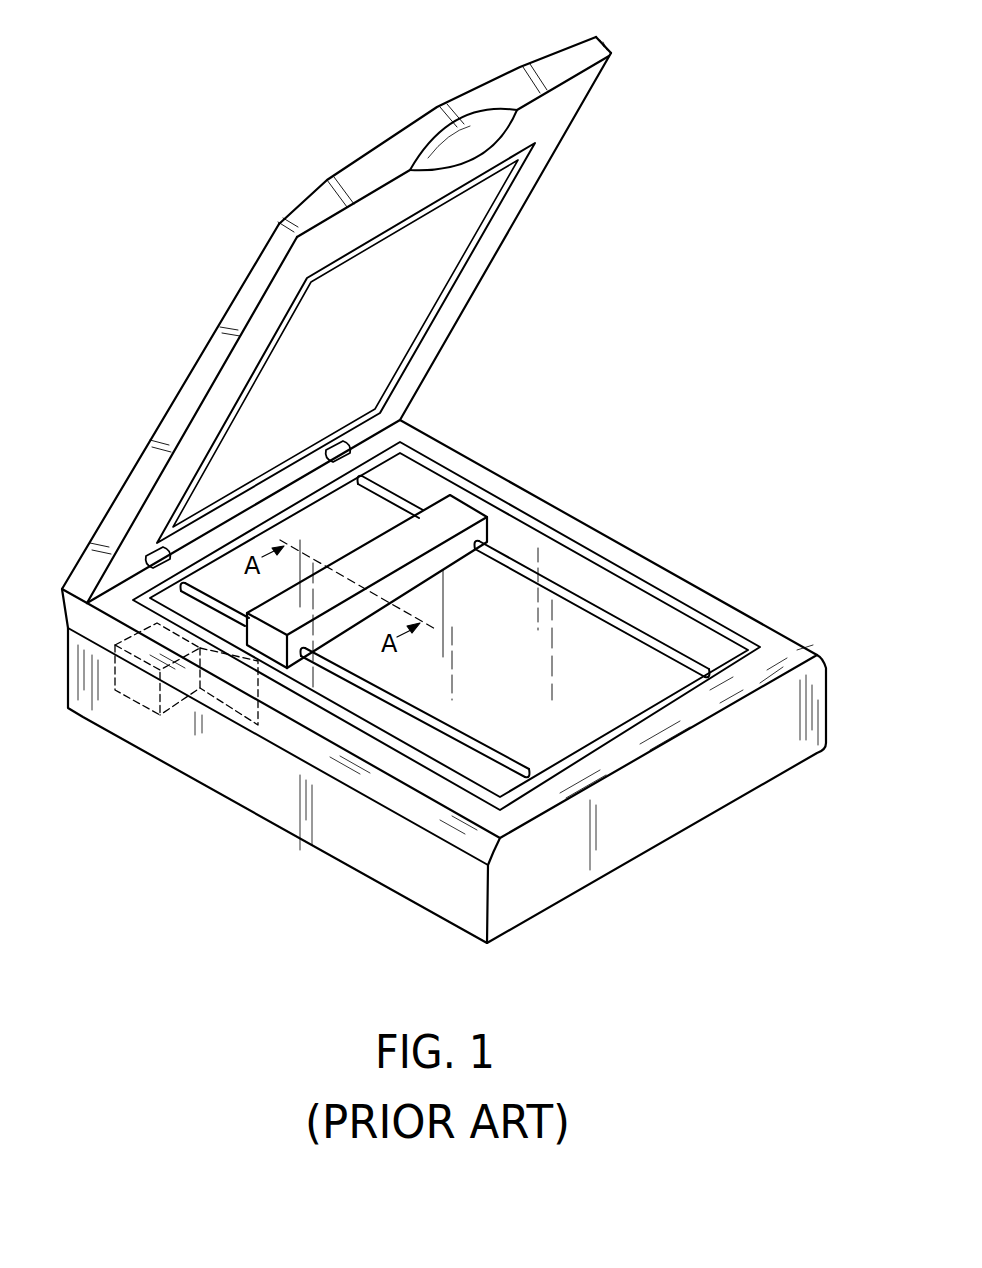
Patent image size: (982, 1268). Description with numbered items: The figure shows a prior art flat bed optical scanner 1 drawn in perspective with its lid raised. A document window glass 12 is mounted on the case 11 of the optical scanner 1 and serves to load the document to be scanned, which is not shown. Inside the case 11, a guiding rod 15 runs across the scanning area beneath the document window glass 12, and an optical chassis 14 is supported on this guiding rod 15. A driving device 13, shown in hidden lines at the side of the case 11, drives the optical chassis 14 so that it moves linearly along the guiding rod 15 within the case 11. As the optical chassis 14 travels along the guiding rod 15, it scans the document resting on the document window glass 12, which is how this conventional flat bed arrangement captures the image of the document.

The optical scanner 1 is at (722, 430).
The case 11 is at (717, 612).
The document window glass 12 is at (530, 530).
The driving device 13 is at (145, 692).
The optical chassis 14 is at (460, 513).
The guiding rod 15 is at (593, 613).